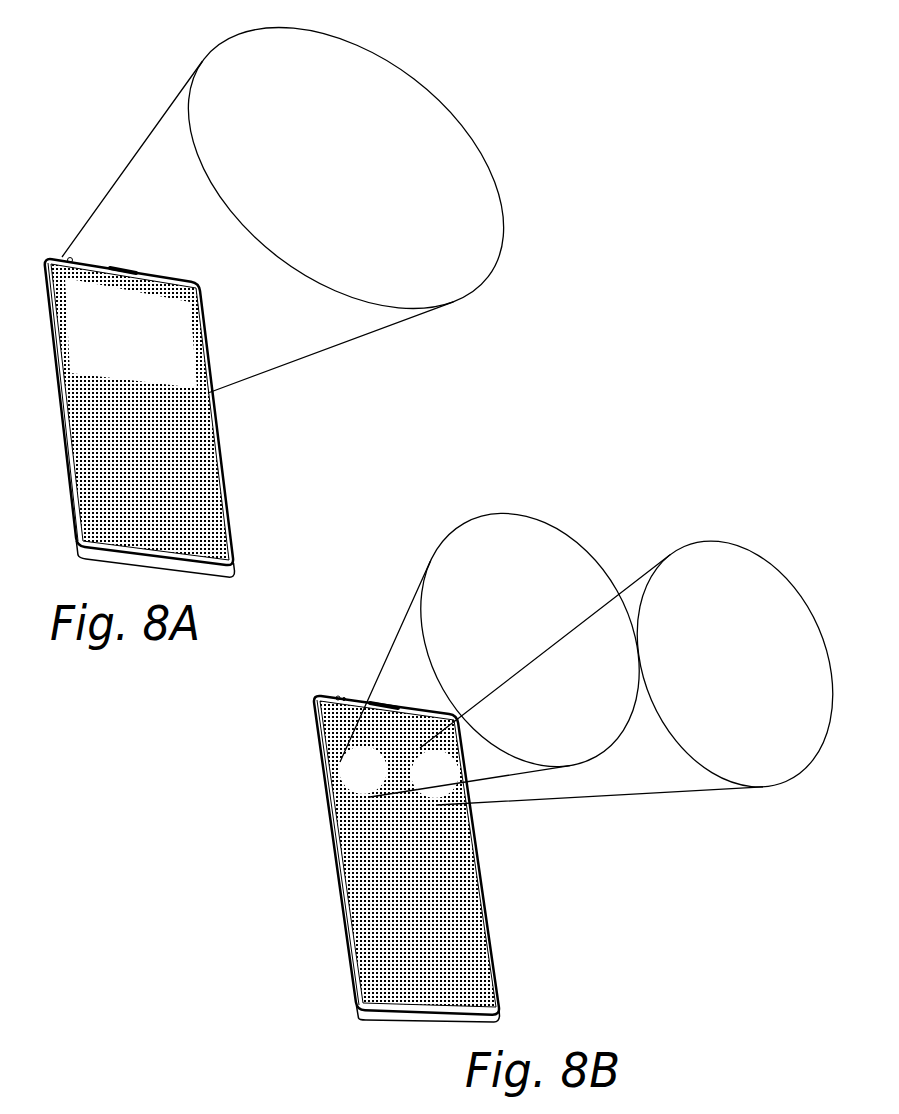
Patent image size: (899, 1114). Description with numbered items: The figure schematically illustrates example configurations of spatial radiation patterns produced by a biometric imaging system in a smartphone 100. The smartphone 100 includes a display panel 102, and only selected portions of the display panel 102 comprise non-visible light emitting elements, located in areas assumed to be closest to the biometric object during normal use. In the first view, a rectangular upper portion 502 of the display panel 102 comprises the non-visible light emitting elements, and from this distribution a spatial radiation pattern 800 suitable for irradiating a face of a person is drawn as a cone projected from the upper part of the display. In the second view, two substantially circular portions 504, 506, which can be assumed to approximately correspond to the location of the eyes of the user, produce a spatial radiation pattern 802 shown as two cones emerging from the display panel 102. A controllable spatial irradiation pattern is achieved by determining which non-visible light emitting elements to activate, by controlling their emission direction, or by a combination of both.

In FIG. 8A, the smartphone 100 is at (58, 238).
In FIG. 8B, the smartphone 100 is at (339, 669).
In FIG. 8A, the display panel 102 is at (158, 286).
In FIG. 8B, the display panel 102 is at (325, 718).
In FIG. 8A, the rectangular upper portion 502 is at (168, 353).
In FIG. 8B, the substantially circular portion 504 is at (362, 774).
In FIG. 8B, the substantially circular portion 506 is at (438, 766).
In FIG. 8A, the spatial radiation pattern 800 is at (463, 165).
In FIG. 8B, the spatial radiation pattern 802 is at (677, 547).